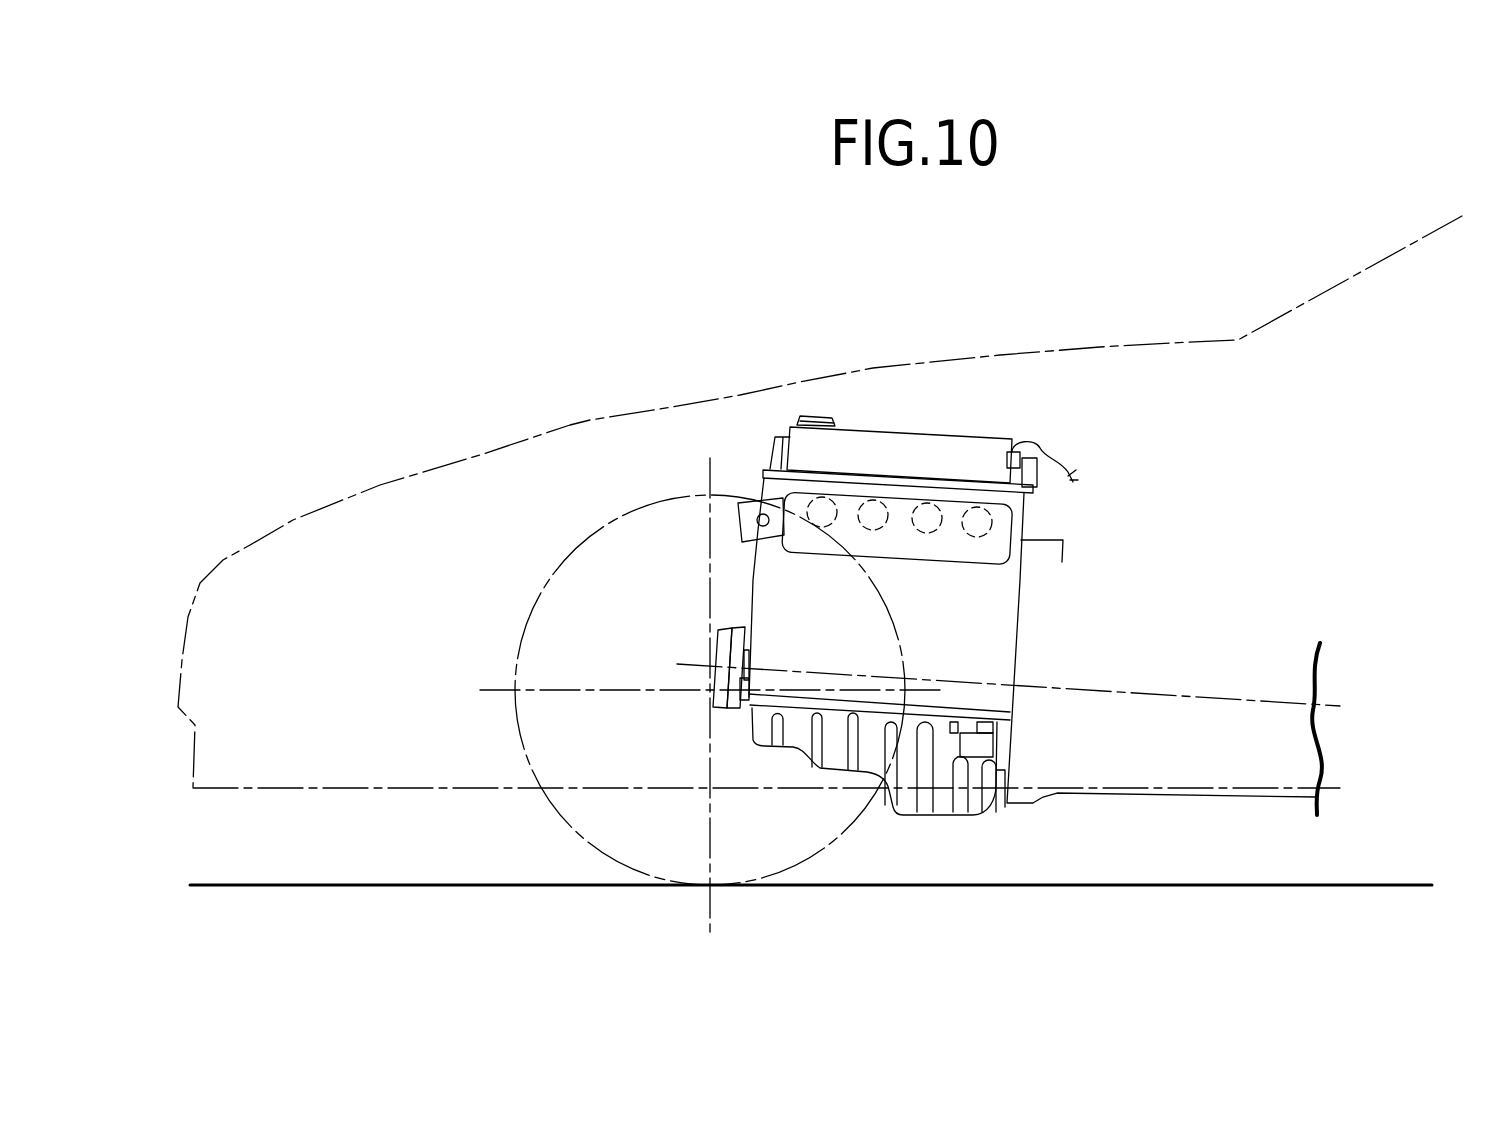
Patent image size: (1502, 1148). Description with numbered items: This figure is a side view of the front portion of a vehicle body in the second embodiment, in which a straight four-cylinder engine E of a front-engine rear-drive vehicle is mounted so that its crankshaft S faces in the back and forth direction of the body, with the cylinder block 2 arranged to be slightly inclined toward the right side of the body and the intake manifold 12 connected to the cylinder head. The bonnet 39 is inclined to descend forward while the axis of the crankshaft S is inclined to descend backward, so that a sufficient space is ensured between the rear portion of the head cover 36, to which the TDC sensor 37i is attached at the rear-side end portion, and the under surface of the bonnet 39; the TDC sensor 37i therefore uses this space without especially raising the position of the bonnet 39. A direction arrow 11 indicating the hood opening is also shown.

The cylinder block 2 is at (1005, 612).
The direction arrow / hood opening 11 is at (883, 273).
The intake manifold 12 is at (902, 488).
The head cover 36 is at (940, 445).
The TDC sensor 37i is at (1020, 450).
The bonnet 39 is at (677, 407).
The engine E is at (967, 593).
The crankshaft S is at (749, 657).